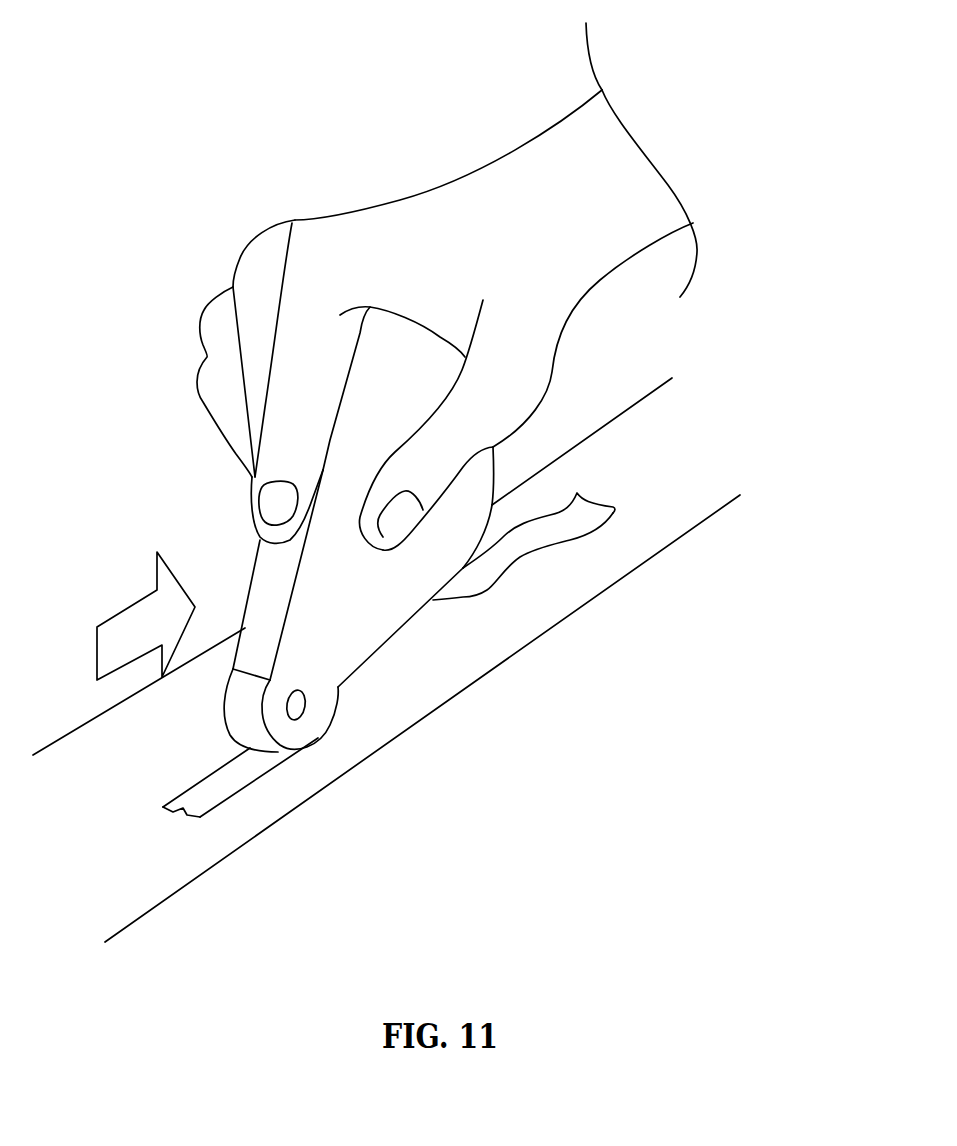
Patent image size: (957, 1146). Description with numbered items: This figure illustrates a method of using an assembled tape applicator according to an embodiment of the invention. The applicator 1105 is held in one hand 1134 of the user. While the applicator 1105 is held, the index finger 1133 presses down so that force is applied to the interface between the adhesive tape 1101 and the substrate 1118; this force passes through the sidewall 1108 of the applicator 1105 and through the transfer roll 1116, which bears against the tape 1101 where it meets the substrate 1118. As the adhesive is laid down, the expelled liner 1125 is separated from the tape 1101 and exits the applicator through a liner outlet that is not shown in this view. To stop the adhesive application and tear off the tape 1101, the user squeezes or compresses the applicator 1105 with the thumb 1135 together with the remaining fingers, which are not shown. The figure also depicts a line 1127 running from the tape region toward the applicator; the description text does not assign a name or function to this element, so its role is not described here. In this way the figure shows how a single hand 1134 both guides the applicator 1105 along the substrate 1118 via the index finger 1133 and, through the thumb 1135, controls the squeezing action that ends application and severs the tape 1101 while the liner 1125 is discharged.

The adhesive tape 1101 is at (257, 782).
The applicator 1105 is at (605, 350).
The sidewall 1108 is at (263, 615).
The transfer roll 1116 is at (318, 738).
The substrate 1118 is at (152, 892).
The expelled liner 1125 is at (547, 543).
The cut line 1127 is at (373, 618).
The index finger 1133 is at (282, 455).
The hand 1134 is at (518, 162).
The thumb 1135 is at (412, 525).